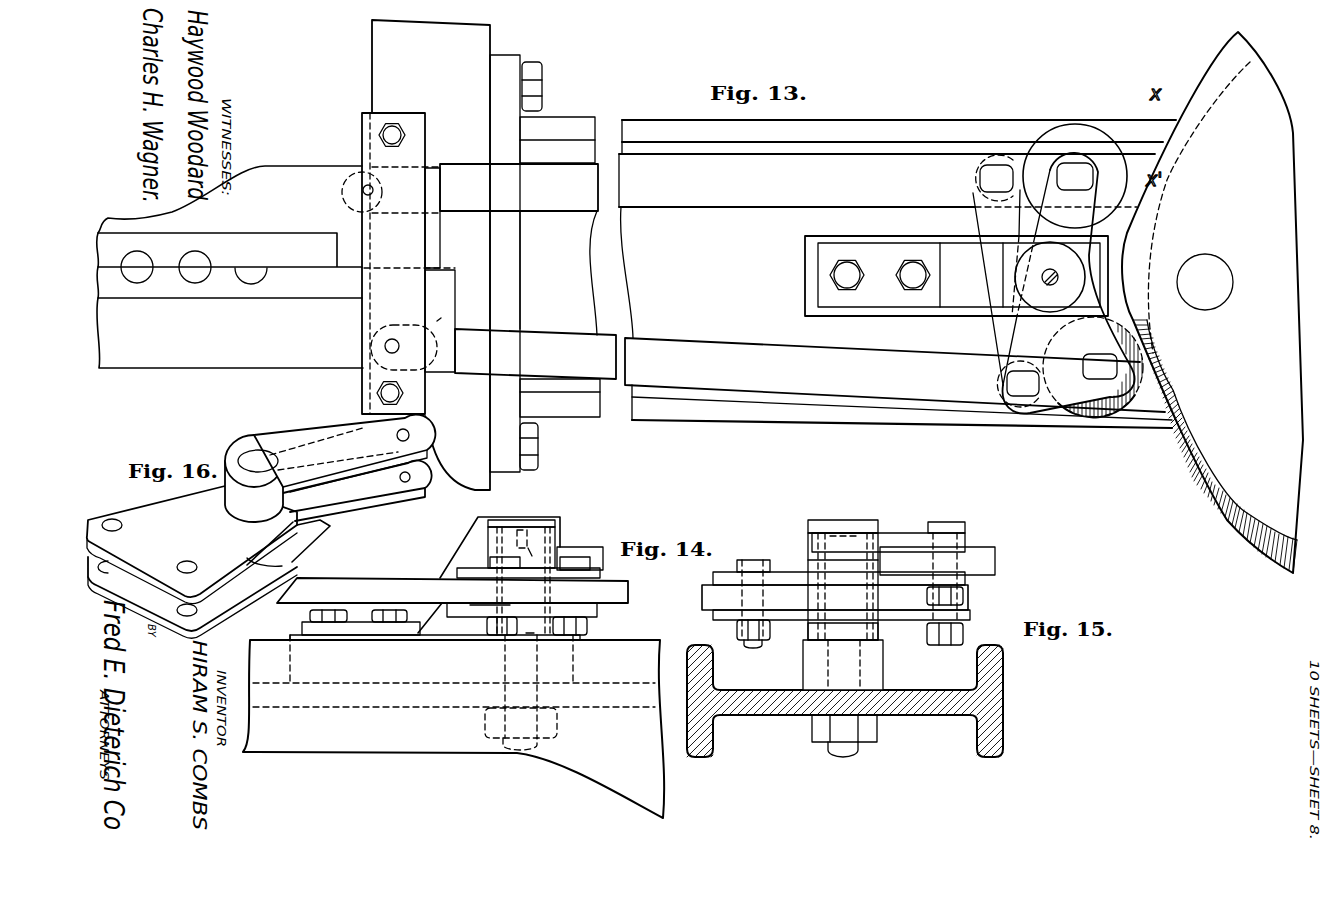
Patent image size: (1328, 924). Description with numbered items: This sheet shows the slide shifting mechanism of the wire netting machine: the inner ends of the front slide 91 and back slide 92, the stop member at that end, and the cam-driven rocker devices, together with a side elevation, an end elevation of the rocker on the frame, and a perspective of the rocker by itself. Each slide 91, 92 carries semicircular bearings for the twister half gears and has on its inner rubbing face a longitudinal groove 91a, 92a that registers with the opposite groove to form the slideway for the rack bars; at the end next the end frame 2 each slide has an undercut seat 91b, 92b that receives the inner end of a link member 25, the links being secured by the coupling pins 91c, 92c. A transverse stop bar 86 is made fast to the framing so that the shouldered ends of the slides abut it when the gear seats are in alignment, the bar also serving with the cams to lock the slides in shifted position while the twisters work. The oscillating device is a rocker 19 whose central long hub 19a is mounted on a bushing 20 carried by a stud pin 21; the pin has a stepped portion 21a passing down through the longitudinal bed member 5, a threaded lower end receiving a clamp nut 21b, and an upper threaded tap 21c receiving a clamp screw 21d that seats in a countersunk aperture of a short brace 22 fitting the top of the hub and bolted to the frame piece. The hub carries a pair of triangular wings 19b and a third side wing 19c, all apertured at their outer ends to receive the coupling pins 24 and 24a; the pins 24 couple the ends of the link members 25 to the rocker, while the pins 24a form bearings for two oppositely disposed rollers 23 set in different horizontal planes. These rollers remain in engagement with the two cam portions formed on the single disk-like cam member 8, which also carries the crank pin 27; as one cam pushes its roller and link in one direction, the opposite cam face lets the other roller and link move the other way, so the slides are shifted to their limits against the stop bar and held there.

In FIG. 16, the end frame 2 is at (494, 255).
In FIG. 13, the longitudinal bed member 5 is at (897, 274).
In FIG. 14, the longitudinal bed member 5 is at (453, 729).
In FIG. 15, the longitudinal bed member 5 is at (845, 701).
In FIG. 13, the cam member 8 is at (1212, 308).
In FIG. 16, the rocker 19 is at (327, 526).
In FIG. 14, the rocker 19 is at (548, 560).
In FIG. 15, the rocker 19 is at (834, 596).
In FIG. 16, the central long hub 19a is at (254, 478).
In FIG. 14, the central long hub 19a is at (533, 553).
In FIG. 15, the central long hub 19a is at (843, 565).
In FIG. 13, the transversely projected wing 19b is at (1093, 367).
In FIG. 16, the transversely projected wing 19b is at (380, 492).
In FIG. 14, the transversely projected wing 19b is at (513, 582).
In FIG. 15, the transversely projected wing 19b is at (720, 575).
In FIG. 16, the third wing 19c is at (336, 453).
In FIG. 14, the bushing 20 is at (575, 558).
In FIG. 15, the bushing 20 is at (895, 540).
In FIG. 14, the stud pin 21 is at (603, 612).
In FIG. 15, the stud pin 21 is at (843, 586).
In FIG. 14, the stepped portion 21a is at (533, 636).
In FIG. 15, the stepped portion 21a is at (876, 655).
In FIG. 14, the clamp nut 21b is at (528, 735).
In FIG. 15, the clamp nut 21b is at (868, 730).
In FIG. 14, the threaded tap 21c is at (525, 537).
In FIG. 15, the threaded tap 21c is at (850, 545).
In FIG. 13, the clamp screw 21d is at (1050, 277).
In FIG. 14, the clamp screw 21d is at (517, 520).
In FIG. 15, the clamp screw 21d is at (858, 512).
In FIG. 13, the brace 22 is at (956, 276).
In FIG. 14, the brace 22 is at (470, 522).
In FIG. 13, the roller 23 is at (1133, 440).
In FIG. 14, the roller 23 is at (600, 572).
In FIG. 15, the roller 23 is at (690, 613).
In FIG. 13, the coupling pin 24 is at (980, 178).
In FIG. 14, the coupling pin 24 is at (497, 562).
In FIG. 13, the coupling pin 24a is at (1070, 188).
In FIG. 14, the coupling pin 24a is at (600, 582).
In FIG. 15, the coupling pin 24a is at (762, 556).
In FIG. 13, the link member 25 is at (892, 283).
In FIG. 14, the link member 25 is at (580, 565).
In FIG. 13, the crank pin 27 is at (1207, 310).
In FIG. 16, the stop bar 86 is at (439, 321).
In FIG. 16, the front slide 91 is at (230, 333).
In FIG. 16, the longitudinal groove 91a is at (276, 282).
In FIG. 16, the undercut seat 91b is at (437, 321).
In FIG. 16, the coupling pin 91c is at (399, 346).
In FIG. 16, the back slide 92 is at (230, 199).
In FIG. 16, the longitudinal groove 92a is at (229, 258).
In FIG. 16, the undercut seat 92b is at (406, 217).
In FIG. 16, the coupling pin 92c is at (373, 190).